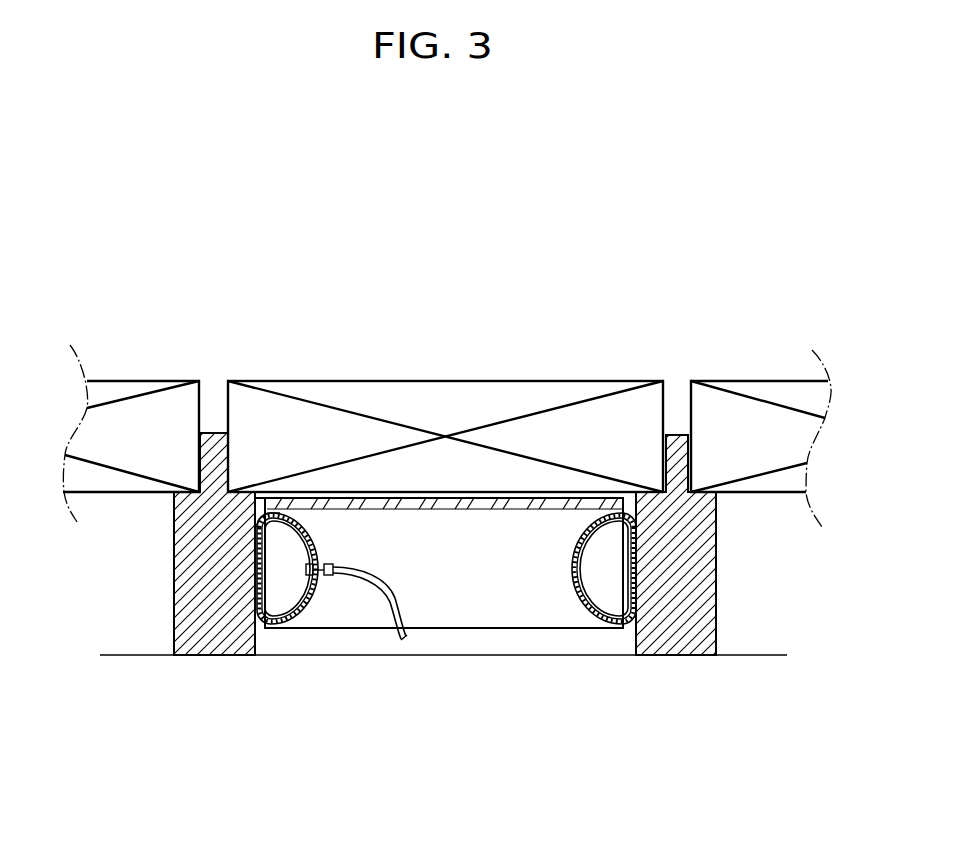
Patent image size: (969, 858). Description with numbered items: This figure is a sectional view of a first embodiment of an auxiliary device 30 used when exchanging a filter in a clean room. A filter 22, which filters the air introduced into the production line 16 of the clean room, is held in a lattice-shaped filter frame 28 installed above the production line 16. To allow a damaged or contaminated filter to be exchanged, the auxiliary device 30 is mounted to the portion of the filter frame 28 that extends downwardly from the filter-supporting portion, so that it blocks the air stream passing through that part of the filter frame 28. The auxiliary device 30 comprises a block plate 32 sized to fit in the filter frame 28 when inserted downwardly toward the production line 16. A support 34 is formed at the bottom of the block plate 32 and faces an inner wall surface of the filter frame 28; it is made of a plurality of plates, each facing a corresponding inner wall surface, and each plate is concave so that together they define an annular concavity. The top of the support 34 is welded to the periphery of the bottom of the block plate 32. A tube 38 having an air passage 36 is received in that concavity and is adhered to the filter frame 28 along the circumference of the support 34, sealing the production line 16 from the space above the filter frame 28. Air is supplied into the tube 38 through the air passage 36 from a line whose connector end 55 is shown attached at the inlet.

The production line 16 is at (548, 717).
The filter 22 is at (470, 381).
The filter frame 28 is at (718, 580).
The auxiliary device 30 is at (488, 634).
The block plate 32 is at (447, 498).
The support 34 is at (318, 601).
The air passage 36 is at (306, 570).
The tube 38 is at (274, 520).
The connector end 55 is at (332, 498).